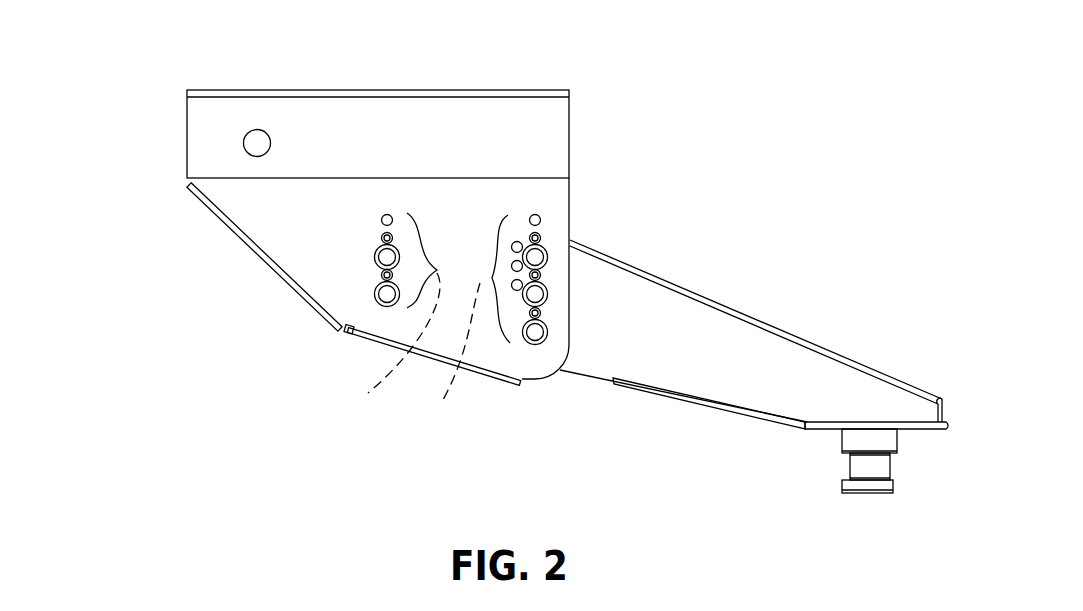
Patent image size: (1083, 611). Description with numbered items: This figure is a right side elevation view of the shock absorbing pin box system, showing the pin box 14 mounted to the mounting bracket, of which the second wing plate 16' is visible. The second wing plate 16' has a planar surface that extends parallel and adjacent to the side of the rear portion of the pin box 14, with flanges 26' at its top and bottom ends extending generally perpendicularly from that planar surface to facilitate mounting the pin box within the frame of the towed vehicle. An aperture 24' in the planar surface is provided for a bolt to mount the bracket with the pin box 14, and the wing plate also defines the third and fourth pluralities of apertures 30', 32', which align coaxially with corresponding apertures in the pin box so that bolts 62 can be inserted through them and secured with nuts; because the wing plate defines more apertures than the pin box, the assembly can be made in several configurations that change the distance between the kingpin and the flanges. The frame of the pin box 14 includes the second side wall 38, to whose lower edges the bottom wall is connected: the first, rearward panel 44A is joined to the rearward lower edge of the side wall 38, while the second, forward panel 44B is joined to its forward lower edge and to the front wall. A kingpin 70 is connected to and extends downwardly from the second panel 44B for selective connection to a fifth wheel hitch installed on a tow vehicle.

The pin box 14 is at (828, 288).
The second wing plate 16' is at (211, 257).
The aperture 24' is at (202, 83).
The flange 26' is at (334, 226).
The third plurality of apertures 30' is at (447, 365).
The fourth plurality of apertures 32' is at (388, 355).
The second side wall 38 is at (788, 393).
The first panel 44A is at (682, 413).
The second panel 44B is at (930, 442).
The bolt 62 is at (387, 257).
The kingpin 70 is at (870, 495).